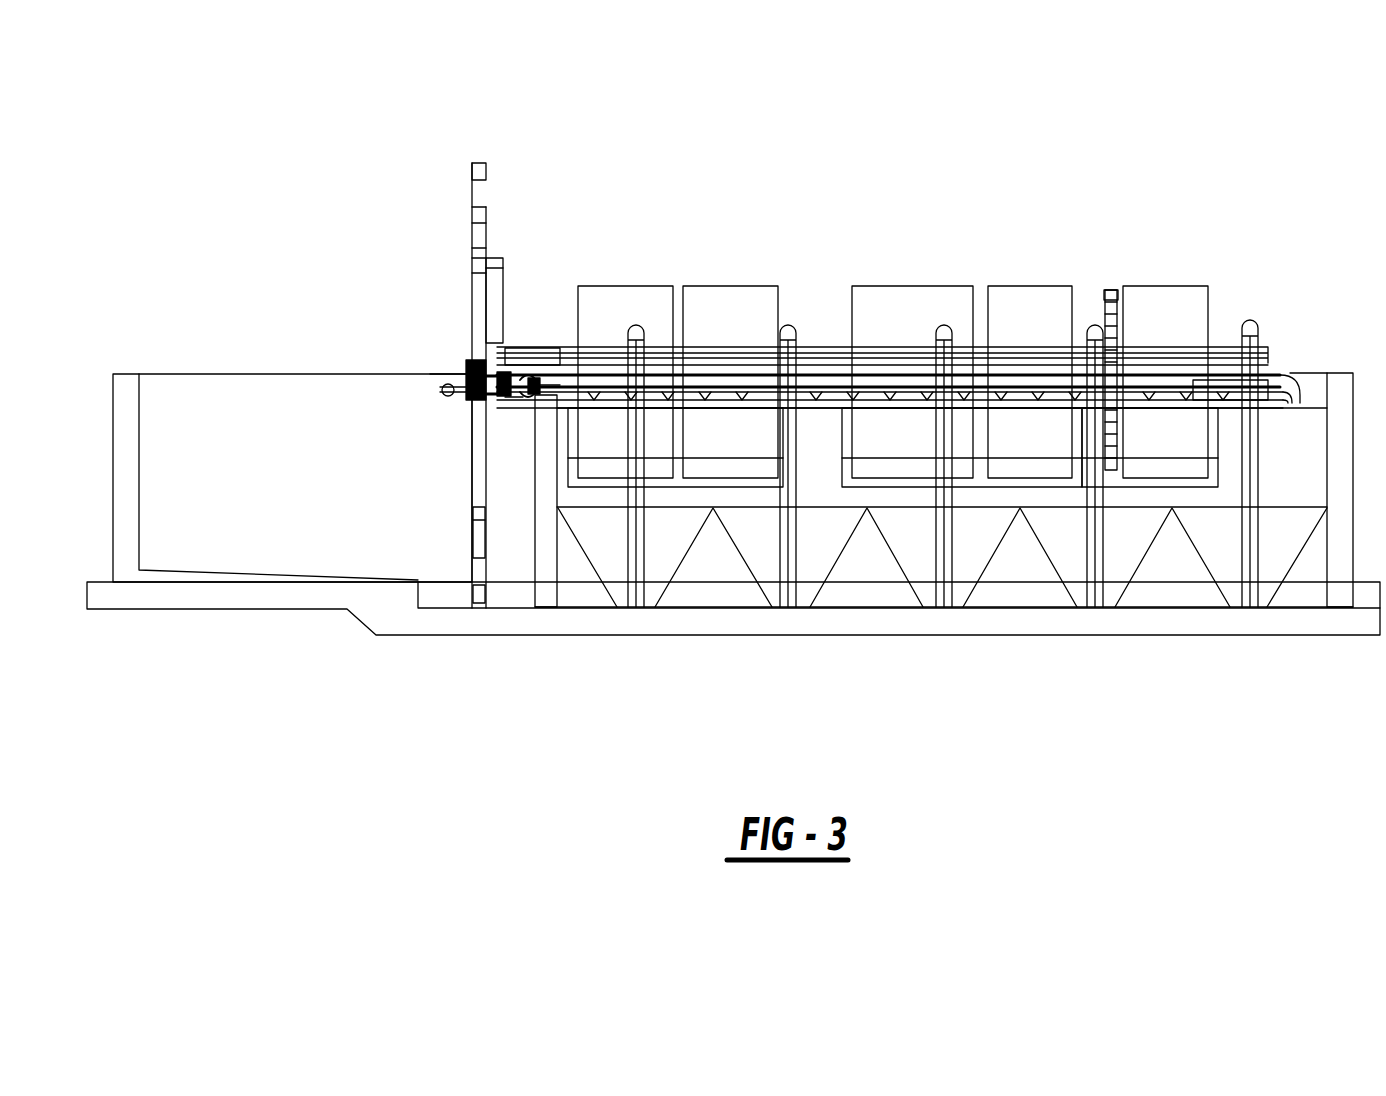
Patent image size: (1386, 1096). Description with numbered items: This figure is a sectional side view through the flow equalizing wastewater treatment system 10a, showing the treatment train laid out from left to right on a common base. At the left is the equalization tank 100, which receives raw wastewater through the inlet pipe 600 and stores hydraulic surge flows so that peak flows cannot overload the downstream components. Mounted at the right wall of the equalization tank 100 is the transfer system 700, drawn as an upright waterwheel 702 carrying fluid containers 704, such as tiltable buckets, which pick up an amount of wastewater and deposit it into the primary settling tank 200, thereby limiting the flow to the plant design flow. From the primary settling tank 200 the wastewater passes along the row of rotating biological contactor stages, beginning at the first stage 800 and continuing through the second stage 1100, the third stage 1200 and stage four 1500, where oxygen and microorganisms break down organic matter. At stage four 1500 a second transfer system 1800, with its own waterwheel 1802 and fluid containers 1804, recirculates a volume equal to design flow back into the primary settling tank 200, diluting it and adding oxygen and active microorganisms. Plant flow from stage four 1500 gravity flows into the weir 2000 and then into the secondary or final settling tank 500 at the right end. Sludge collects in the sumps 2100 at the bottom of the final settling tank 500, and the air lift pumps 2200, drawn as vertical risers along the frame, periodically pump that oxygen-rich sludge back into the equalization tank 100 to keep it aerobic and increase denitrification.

The flow equalizing wastewater treatment system 10a is at (832, 173).
The equalization tank 100 is at (268, 358).
The primary settling tank 200 is at (960, 429).
The secondary or final settling tank 500 is at (1335, 440).
The inlet pipe 600 is at (447, 400).
The transfer system 700 is at (458, 349).
The waterwheel 702 is at (472, 195).
The fluid containers 704 is at (486, 173).
The first stage 800 is at (683, 272).
The second stage 1100 is at (888, 272).
The third stage 1200 is at (1033, 270).
The stage four 1500 is at (1160, 278).
The transfer system 1800 is at (1121, 288).
The waterwheel 1802 is at (1097, 300).
The fluid containers 1804 is at (1083, 300).
The weir 2000 is at (1193, 400).
The sumps 2100 is at (657, 567).
The air lift pumps 2200 is at (640, 527).